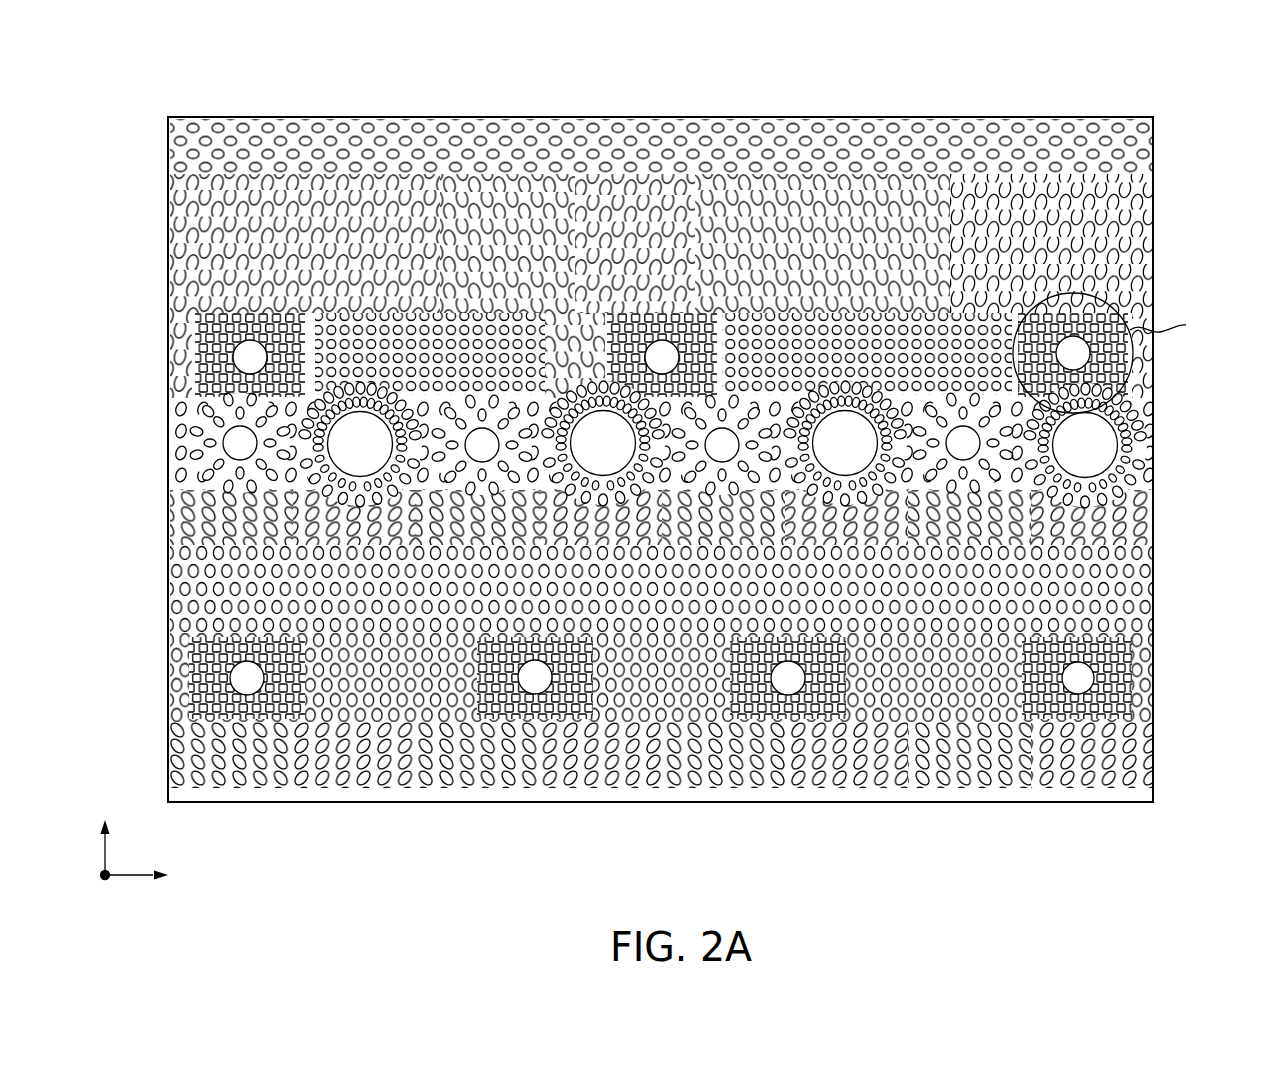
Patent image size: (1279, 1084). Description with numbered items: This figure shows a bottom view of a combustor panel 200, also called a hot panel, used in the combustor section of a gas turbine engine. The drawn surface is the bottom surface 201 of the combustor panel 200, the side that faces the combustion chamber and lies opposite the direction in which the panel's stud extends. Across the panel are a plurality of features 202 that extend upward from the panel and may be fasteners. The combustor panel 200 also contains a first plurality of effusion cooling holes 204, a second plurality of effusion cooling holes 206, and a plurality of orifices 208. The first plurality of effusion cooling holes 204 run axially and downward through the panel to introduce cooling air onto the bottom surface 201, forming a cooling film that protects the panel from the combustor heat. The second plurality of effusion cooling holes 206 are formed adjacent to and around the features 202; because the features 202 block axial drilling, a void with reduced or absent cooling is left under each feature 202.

The combustor panel 200 is at (130, 126).
The bottom surface 201 is at (176, 153).
The features 202 is at (1072, 367).
The first plurality of effusion cooling holes 204 is at (1140, 236).
The second plurality of effusion cooling holes 206 is at (187, 353).
The orifices 208 is at (1110, 445).